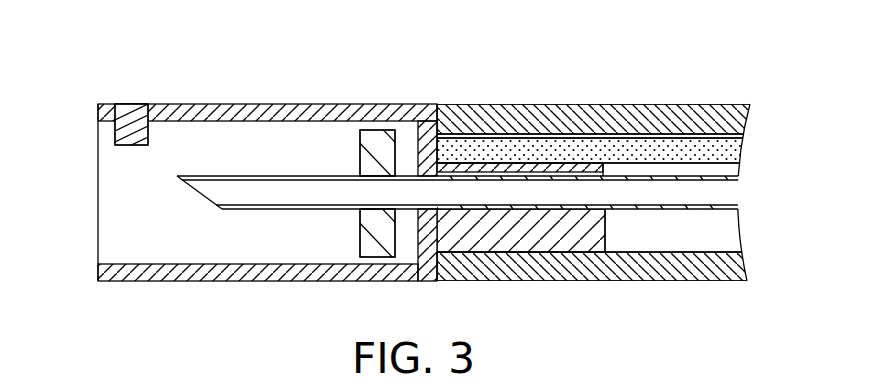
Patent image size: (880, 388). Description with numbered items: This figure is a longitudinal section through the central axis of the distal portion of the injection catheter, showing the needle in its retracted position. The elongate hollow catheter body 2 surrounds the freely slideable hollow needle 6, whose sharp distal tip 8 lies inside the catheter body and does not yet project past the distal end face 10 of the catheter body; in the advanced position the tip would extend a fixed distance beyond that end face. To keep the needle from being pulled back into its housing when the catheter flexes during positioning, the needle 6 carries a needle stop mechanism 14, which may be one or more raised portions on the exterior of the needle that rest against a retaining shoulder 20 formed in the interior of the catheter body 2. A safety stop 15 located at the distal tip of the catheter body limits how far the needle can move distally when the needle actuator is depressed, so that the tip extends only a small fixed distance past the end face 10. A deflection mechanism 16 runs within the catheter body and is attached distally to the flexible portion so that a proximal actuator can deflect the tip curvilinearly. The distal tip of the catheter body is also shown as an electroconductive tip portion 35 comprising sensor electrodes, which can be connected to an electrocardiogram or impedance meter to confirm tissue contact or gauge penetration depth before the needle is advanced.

The catheter body 2 is at (633, 107).
The hollow needle 6 is at (293, 175).
The sharp distal tip 8 is at (193, 197).
The distal end face 10 is at (108, 177).
The needle stop mechanism 14 is at (358, 225).
The safety stop 15 is at (150, 137).
The deflection mechanism 16 is at (738, 148).
The retaining shoulder 20 is at (418, 158).
The electroconductive tip portion 35 is at (245, 110).